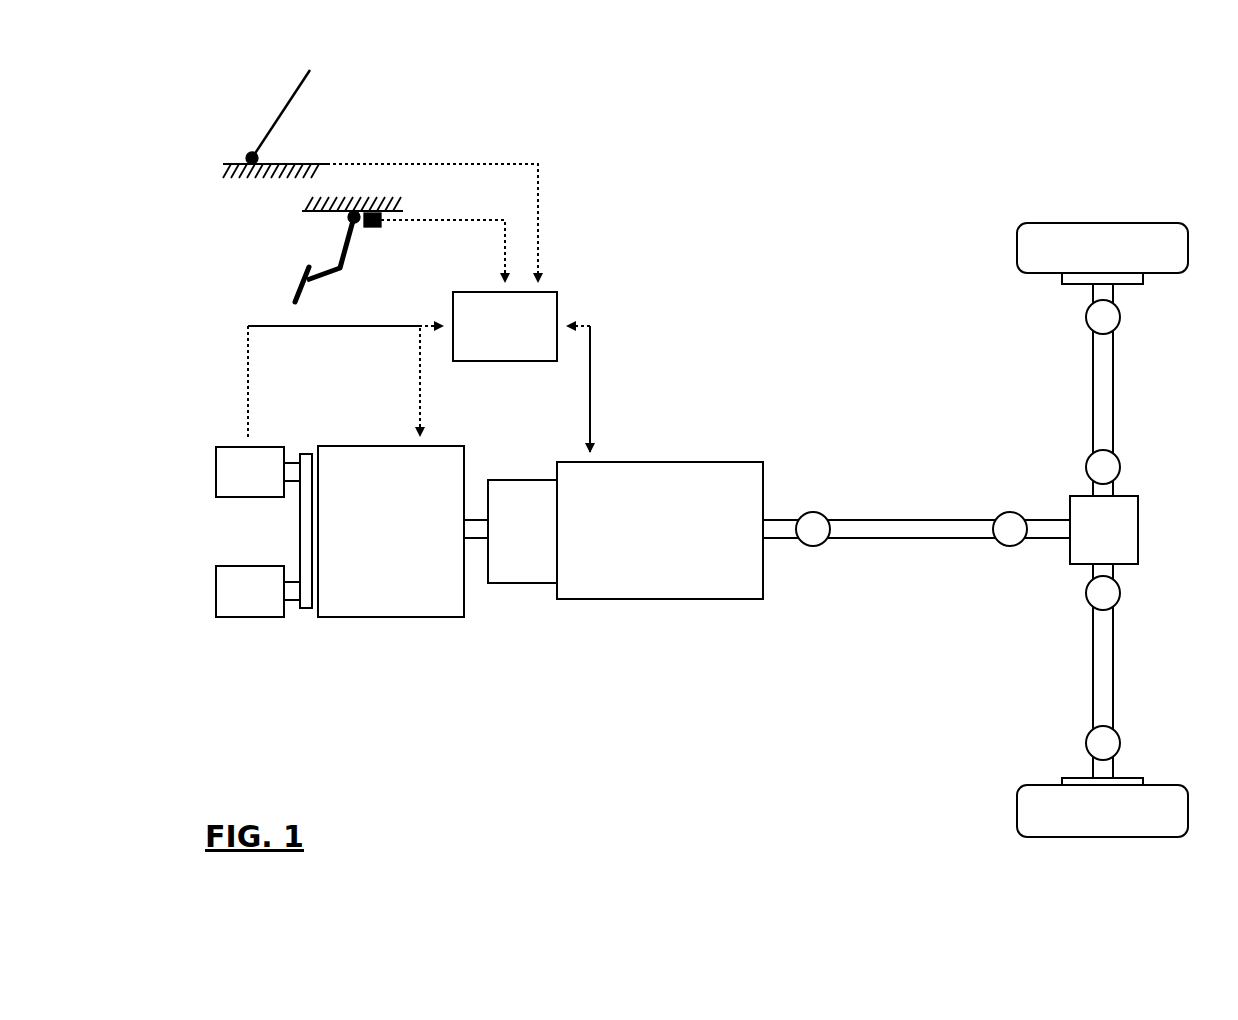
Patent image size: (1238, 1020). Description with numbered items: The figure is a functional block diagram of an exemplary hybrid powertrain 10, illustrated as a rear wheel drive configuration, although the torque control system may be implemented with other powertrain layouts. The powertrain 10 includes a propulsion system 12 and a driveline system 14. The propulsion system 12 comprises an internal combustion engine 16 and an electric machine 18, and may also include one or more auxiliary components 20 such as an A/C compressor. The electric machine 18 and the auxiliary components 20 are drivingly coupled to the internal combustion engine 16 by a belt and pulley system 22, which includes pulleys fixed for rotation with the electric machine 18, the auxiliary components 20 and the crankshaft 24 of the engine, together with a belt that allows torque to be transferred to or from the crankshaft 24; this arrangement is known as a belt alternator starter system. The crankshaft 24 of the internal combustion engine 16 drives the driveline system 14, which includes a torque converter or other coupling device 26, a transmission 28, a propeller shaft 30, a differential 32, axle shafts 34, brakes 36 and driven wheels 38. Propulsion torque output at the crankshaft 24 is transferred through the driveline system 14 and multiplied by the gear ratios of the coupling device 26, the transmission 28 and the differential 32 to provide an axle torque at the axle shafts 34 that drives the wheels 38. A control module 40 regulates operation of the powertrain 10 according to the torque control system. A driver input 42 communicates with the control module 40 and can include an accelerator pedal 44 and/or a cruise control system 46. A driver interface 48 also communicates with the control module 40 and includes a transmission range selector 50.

The hybrid powertrain 10 is at (176, 264).
The propulsion system 12 is at (208, 670).
The driveline system 14 is at (762, 686).
The internal combustion engine 16 is at (413, 617).
The electric machine 18 is at (216, 487).
The auxiliary components 20 is at (216, 605).
The belt and pulley system 22 is at (300, 630).
The crankshaft 24 is at (466, 542).
The torque converter or other coupling device 26 is at (502, 480).
The transmission 28 is at (620, 462).
The propeller shaft 30 is at (867, 520).
The differential 32 is at (1138, 510).
The axle shafts 34 is at (1113, 400).
The brakes 36 is at (1138, 284).
The driven wheels 38 is at (1032, 273).
The control module 40 is at (557, 302).
The driver input 42 is at (328, 233).
The accelerator pedal 44 is at (327, 277).
The cruise control system 46 is at (372, 227).
The driver interface 48 is at (299, 136).
The transmission range selector 50 is at (274, 122).